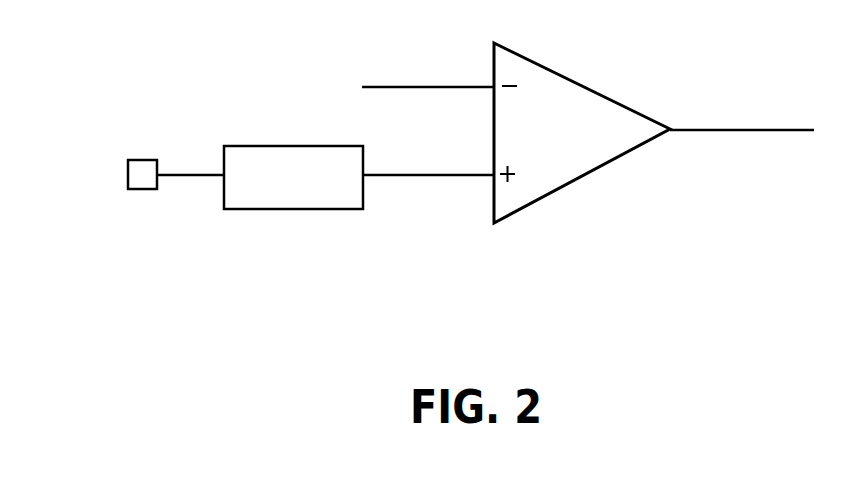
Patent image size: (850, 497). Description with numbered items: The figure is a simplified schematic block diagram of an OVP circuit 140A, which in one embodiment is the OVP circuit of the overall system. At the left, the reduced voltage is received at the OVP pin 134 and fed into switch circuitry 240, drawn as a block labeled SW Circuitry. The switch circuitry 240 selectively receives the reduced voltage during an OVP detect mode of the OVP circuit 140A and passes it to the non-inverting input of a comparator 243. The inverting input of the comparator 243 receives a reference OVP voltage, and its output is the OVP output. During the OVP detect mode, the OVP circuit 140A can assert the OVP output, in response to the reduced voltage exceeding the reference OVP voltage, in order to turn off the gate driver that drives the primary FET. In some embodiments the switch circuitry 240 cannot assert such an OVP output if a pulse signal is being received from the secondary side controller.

The OVP pin 134 is at (128, 176).
The switch circuitry 240 is at (310, 202).
The comparator 243 is at (567, 78).
The OVP circuit 140A is at (710, 275).